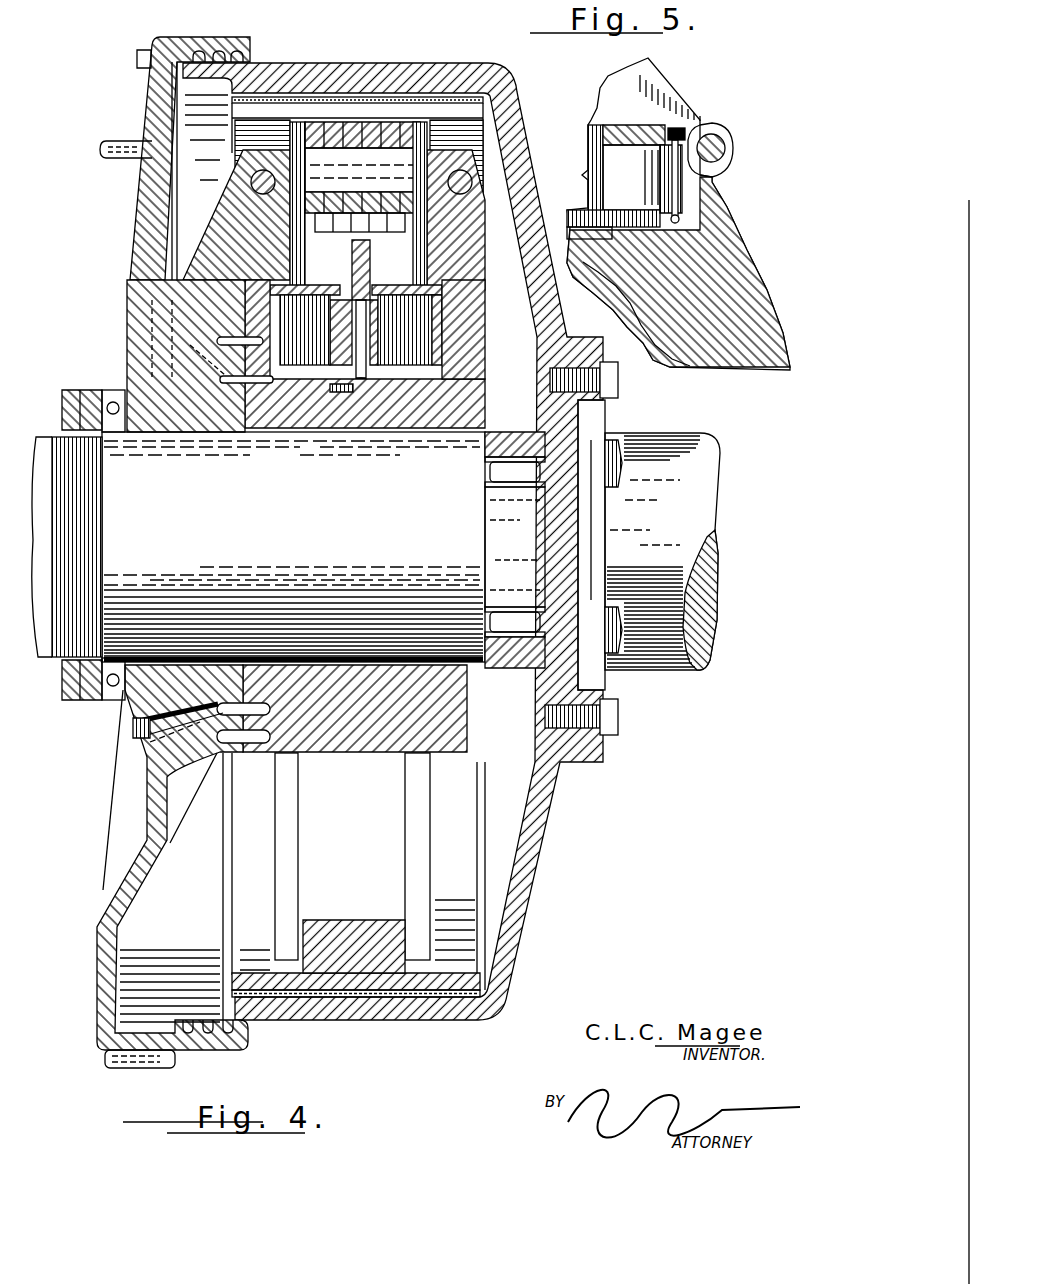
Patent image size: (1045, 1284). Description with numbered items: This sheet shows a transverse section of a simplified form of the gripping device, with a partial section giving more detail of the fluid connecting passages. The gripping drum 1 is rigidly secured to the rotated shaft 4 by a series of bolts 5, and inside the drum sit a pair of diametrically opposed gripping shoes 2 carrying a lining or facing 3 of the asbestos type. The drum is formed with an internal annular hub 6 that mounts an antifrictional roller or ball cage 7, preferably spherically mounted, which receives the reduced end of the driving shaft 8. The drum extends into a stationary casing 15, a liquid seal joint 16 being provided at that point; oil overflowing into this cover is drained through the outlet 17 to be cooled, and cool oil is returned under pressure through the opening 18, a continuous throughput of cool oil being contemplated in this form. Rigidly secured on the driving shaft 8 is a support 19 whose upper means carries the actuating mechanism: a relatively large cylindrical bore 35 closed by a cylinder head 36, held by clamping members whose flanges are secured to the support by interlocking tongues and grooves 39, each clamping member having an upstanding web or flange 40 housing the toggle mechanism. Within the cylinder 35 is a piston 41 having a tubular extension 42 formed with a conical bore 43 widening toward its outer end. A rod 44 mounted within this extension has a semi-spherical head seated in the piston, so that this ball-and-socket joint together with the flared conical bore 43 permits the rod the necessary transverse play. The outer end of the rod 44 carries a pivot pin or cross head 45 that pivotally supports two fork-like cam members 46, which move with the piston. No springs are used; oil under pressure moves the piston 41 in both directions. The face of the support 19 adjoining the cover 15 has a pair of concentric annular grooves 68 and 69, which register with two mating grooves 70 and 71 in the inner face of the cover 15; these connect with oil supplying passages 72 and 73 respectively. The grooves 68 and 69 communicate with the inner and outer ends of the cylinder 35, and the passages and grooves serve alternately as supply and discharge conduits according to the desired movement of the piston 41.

In FIG. 4, the gripping drum 1 is at (508, 810).
In FIG. 4, the gripping shoes 2 is at (468, 802).
In FIG. 4, the lining or facing 3 is at (445, 992).
In FIG. 4, the rotated shaft 4 is at (700, 485).
In FIG. 4, the bolts 5 is at (614, 455).
In FIG. 4, the internal annular hub 6 is at (513, 660).
In FIG. 4, the antifrictional roller or ball cage 7 is at (516, 466).
In FIG. 4, the driving shaft 8 is at (305, 518).
In FIG. 4, the stationary casing 15 is at (103, 953).
In FIG. 4, the liquid seal joint 16 is at (222, 57).
In FIG. 4, the outlet 17 is at (102, 1066).
In FIG. 4, the opening 18 is at (115, 158).
In FIG. 4, the support 19 is at (375, 742).
In FIG. 4, the cylindrical bore 35 is at (442, 348).
In FIG. 5, the cylindrical bore 35 is at (648, 183).
In FIG. 4, the cylinder head 36 is at (305, 325).
In FIG. 4, the interlocking tongues and grooves 39 is at (452, 325).
In FIG. 5, the interlocking tongues and grooves 39 is at (700, 137).
In FIG. 4, the upstanding web or flange 40 is at (290, 240).
In FIG. 4, the piston 41 is at (440, 378).
In FIG. 5, the piston 41 is at (663, 229).
In FIG. 4, the tubular extension 42 is at (432, 352).
In FIG. 5, the tubular extension 42 is at (588, 176).
In FIG. 4, the conical bore 43 is at (405, 300).
In FIG. 4, the rod 44 is at (372, 325).
In FIG. 4, the pivot pin or cross head 45 is at (292, 262).
In FIG. 4, the fork-like cam members 46 is at (305, 203).
In FIG. 4, the annular groove 68 is at (247, 340).
In FIG. 4, the annular groove 69 is at (125, 380).
In FIG. 4, the mating groove 70 is at (240, 340).
In FIG. 4, the mating groove 71 is at (223, 377).
In FIG. 4, the oil supplying passage 72 is at (133, 760).
In FIG. 4, the oil supplying passage 73 is at (137, 733).